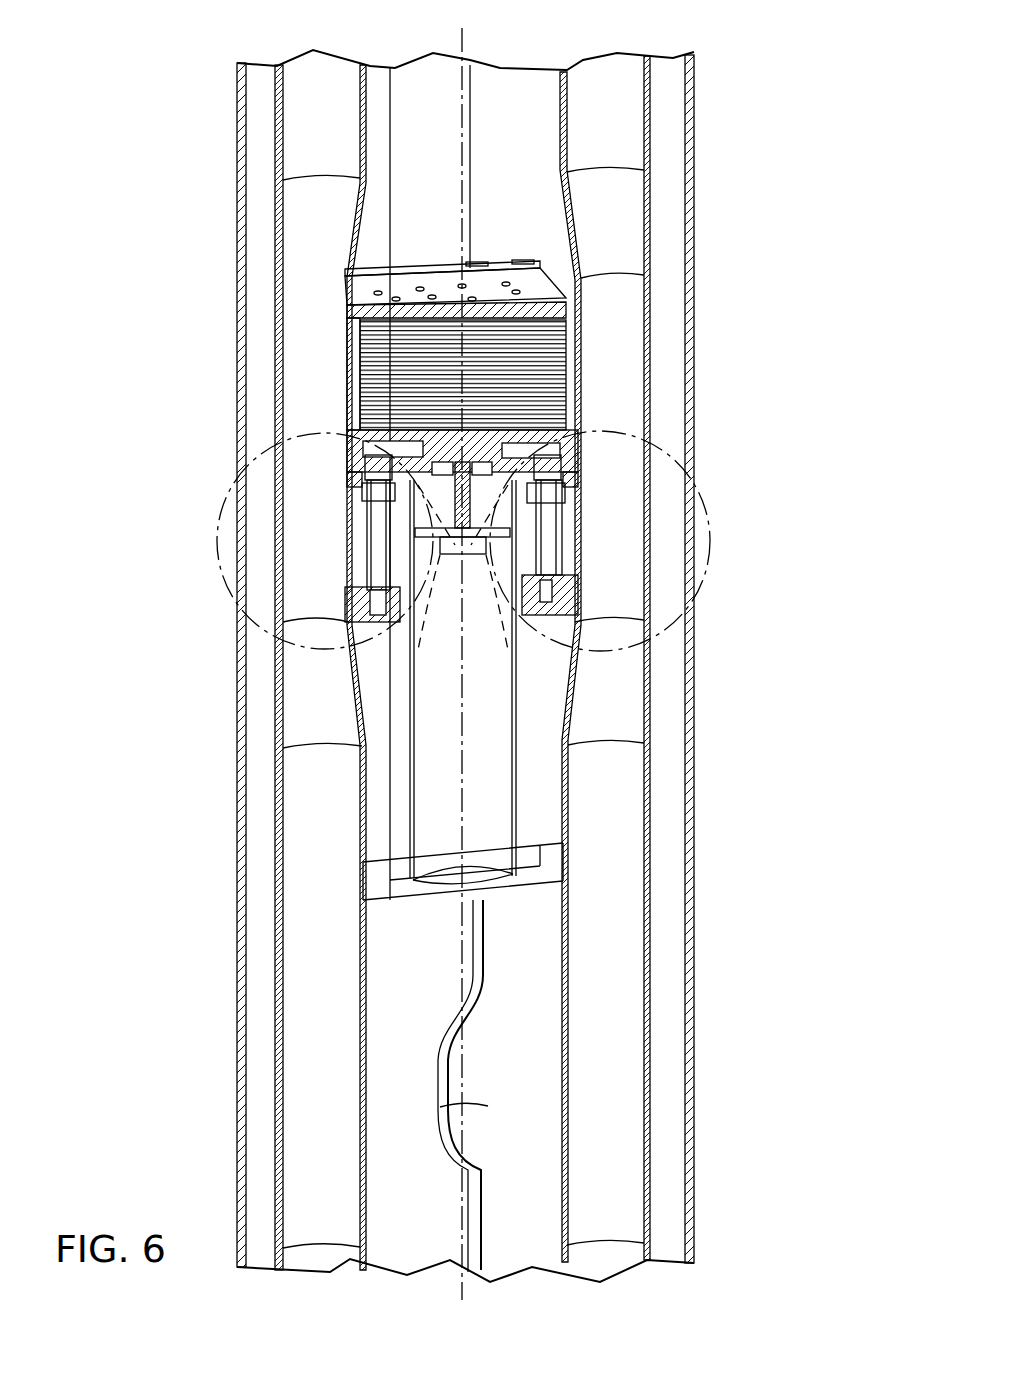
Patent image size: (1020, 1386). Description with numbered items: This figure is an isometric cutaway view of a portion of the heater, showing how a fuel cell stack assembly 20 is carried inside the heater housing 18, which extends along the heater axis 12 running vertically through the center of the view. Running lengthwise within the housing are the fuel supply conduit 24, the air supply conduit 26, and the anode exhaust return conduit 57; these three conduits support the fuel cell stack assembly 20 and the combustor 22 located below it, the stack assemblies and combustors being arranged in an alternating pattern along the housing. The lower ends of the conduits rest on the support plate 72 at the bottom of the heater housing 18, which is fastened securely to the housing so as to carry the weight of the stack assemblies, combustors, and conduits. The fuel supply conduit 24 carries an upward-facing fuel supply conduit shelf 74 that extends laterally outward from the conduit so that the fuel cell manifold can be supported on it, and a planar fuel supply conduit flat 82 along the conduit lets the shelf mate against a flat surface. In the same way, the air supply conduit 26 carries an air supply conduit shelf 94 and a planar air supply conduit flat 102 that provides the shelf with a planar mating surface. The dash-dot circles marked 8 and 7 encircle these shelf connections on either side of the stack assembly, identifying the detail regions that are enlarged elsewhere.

The heater axis 12 is at (462, 40).
The heater housing 18 is at (693, 632).
The fuel supply conduit 24 is at (278, 178).
The air supply conduit 26 is at (650, 128).
The anode exhaust return conduit 57 is at (395, 162).
The fuel cell stack assembly 20 is at (577, 340).
The air supply conduit flat 102 is at (575, 392).
The combustor 22 is at (523, 632).
The fuel supply conduit flat 82 is at (340, 577).
The fuel supply conduit shelf 74 is at (340, 538).
The air supply conduit shelf 94 is at (577, 573).
The support plate 72 is at (530, 1253).
The detail area FIG. 8 is at (228, 597).
The detail area FIG. 7 is at (706, 586).